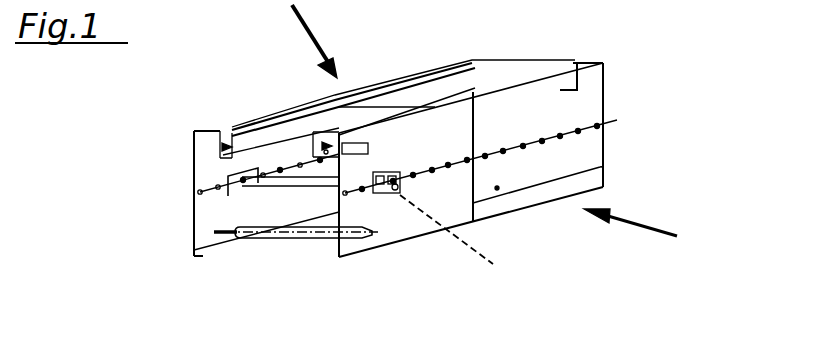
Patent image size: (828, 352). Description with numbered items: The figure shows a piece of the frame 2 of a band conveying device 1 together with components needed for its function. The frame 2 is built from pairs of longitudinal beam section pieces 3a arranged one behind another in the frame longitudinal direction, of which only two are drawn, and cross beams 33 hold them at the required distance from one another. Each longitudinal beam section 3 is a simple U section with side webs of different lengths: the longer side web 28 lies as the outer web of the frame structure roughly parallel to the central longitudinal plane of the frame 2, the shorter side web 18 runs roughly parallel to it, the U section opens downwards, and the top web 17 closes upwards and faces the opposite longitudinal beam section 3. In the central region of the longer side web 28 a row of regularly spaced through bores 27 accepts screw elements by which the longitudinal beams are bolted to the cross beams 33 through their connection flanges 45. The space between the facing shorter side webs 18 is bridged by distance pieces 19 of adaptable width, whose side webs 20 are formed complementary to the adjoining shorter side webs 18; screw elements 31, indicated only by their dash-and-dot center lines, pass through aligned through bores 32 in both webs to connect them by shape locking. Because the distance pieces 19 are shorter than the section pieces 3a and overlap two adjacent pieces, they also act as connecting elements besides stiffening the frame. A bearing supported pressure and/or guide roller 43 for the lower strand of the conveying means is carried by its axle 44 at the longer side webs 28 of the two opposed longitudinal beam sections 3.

The band conveying device 1 is at (630, 213).
The frame 2 is at (318, 41).
The longitudinal beam section 3 is at (235, 160).
The longitudinal beam section piece 3a is at (497, 188).
The top web 17 is at (300, 105).
The shorter side web 18 is at (200, 147).
The distance piece 19 is at (494, 70).
The side web 20 is at (300, 150).
The through bores 27 is at (597, 126).
The longer side web 28 is at (200, 240).
The screw elements 31 is at (295, 112).
The through bores 32 is at (263, 115).
The cross beams 33 is at (270, 181).
The pressure and/or guide roller 43 is at (302, 237).
The axle 44 is at (230, 233).
The connection flanges 45 is at (300, 198).